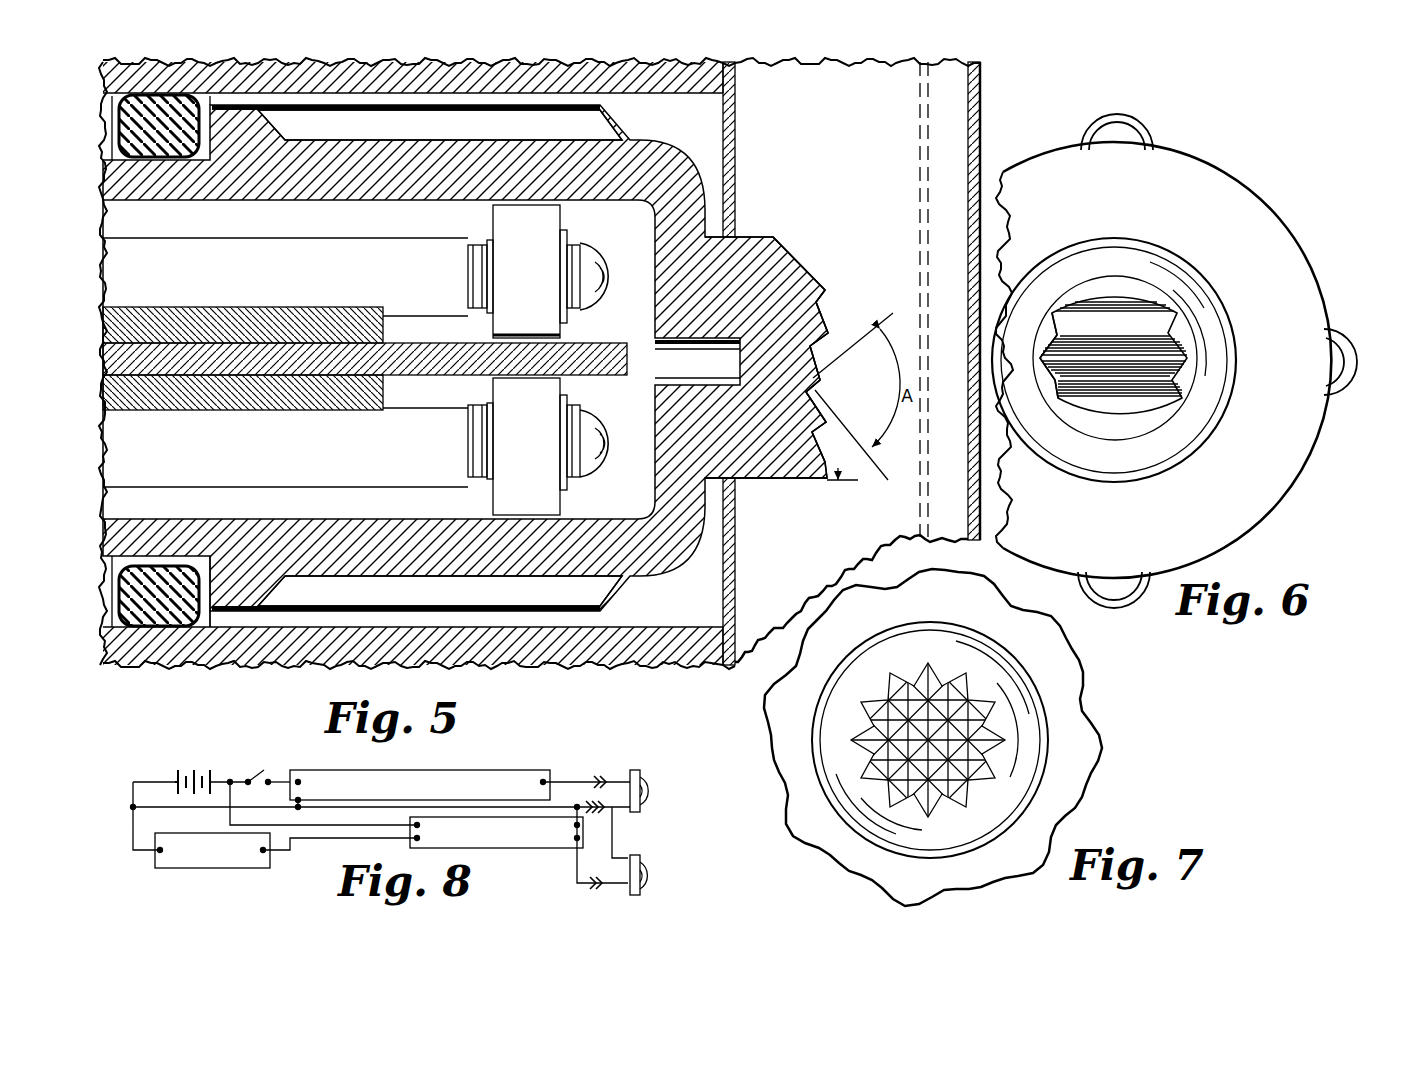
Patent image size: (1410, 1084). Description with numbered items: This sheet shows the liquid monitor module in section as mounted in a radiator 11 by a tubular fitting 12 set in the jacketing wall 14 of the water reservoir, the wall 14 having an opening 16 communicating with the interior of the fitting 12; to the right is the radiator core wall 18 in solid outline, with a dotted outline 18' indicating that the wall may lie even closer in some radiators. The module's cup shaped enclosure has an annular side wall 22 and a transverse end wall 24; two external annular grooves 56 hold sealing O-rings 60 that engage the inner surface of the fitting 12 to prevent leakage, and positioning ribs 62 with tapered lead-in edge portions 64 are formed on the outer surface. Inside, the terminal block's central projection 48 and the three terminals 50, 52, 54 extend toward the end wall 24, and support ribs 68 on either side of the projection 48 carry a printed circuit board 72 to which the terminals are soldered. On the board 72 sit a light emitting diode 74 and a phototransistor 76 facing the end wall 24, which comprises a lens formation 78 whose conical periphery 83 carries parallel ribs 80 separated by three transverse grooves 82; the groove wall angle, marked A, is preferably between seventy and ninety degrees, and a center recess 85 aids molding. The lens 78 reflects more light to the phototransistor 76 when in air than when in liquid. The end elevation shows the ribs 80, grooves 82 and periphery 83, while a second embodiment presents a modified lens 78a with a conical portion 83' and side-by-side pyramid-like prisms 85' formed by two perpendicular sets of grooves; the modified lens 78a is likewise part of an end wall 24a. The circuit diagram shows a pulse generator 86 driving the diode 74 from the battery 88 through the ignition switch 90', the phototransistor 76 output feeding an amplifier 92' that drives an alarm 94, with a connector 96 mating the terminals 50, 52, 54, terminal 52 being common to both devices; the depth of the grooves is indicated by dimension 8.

In FIG. 5, the radiator 11 is at (1006, 108).
In FIG. 5, the tubular fitting 12 is at (552, 76).
In FIG. 5, the jacketing wall 14 is at (737, 572).
In FIG. 5, the opening 16 is at (748, 236).
In FIG. 5, the radiator core wall 18 is at (993, 301).
In FIG. 5, the dotted outline of core wall 18' is at (895, 299).
In FIG. 5, the annular side wall 22 is at (368, 176).
In FIG. 5, the transverse end wall 24 is at (668, 512).
In FIG. 6, the transverse end wall 24 is at (1263, 222).
In FIG. 7, the nozzle body (alternate) 24a is at (823, 846).
In FIG. 5, the central projection 48 is at (305, 314).
In FIG. 8, the electrical terminal 50 is at (612, 884).
In FIG. 5, the electrical terminal 52 is at (168, 314).
In FIG. 8, the electrical terminal 52 is at (620, 830).
In FIG. 8, the electrical terminal 54 is at (621, 778).
In FIG. 5, the external annular groove 56 is at (207, 630).
In FIG. 5, the sealing O-ring 60 is at (166, 164).
In FIG. 5, the positioning rib 62 is at (620, 680).
In FIG. 6, the positioning rib 62 is at (1125, 130).
In FIG. 5, the tapered lead-in edge portion 64 is at (624, 122).
In FIG. 5, the support rib 68 is at (285, 362).
In FIG. 5, the printed circuit board 72 is at (524, 360).
In FIG. 5, the light emitting diode 74 is at (590, 262).
In FIG. 8, the light emitting diode 74 is at (652, 792).
In FIG. 5, the phototransistor 76 is at (592, 452).
In FIG. 8, the phototransistor 76 is at (652, 878).
In FIG. 5, the lens formation 78 is at (760, 450).
In FIG. 7, the modified lens 78a is at (1100, 766).
In FIG. 5, the rib 80 is at (818, 294).
In FIG. 6, the rib 80 is at (1119, 296).
In FIG. 5, the groove 82 is at (828, 310).
In FIG. 6, the groove 82 is at (1068, 314).
In FIG. 5, the periphery of the lens 83 is at (805, 255).
In FIG. 6, the periphery of the lens 83 is at (1114, 345).
In FIG. 7, the peripheral conical portion 83' is at (974, 740).
In FIG. 5, the center recess 85 is at (678, 345).
In FIG. 7, the pyramid-like prism 85' is at (928, 740).
In FIG. 8, the pulse generator 86 is at (533, 770).
In FIG. 8, the battery 88 is at (188, 770).
In FIG. 8, the ignition switch 90' is at (266, 763).
In FIG. 8, the amplifier 92' is at (496, 853).
In FIG. 8, the alarm 94 is at (254, 868).
In FIG. 8, the electrical connector 96 is at (603, 770).
In FIG. 5, the groove depth dimension 8 is at (840, 463).